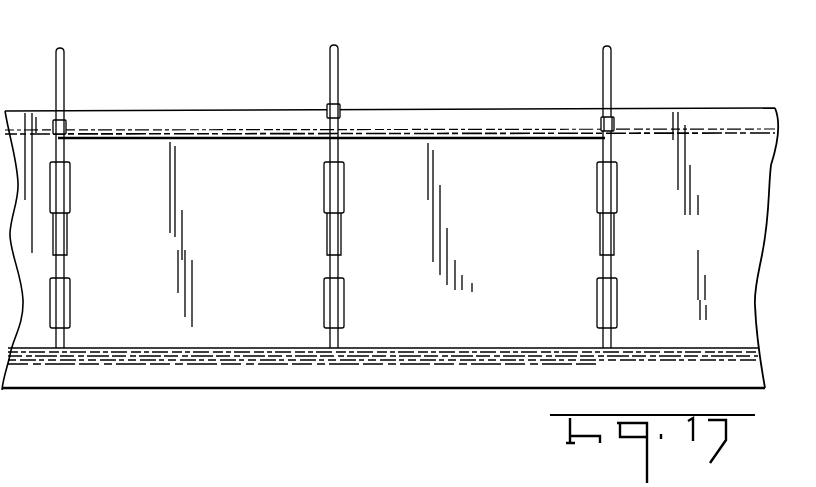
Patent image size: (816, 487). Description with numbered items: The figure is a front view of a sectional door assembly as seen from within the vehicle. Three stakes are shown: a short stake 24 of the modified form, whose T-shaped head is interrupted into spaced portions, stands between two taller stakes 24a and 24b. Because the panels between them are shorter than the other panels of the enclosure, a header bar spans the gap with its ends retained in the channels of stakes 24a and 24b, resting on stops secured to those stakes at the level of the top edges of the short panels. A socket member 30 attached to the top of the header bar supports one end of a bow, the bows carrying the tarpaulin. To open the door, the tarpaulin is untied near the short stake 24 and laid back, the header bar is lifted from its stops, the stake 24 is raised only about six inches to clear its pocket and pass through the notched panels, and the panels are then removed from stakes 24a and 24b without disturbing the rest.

The socket member 30 is at (340, 106).
The stake 24 is at (341, 237).
The stake 24a is at (614, 238).
The stake 24b is at (66, 238).